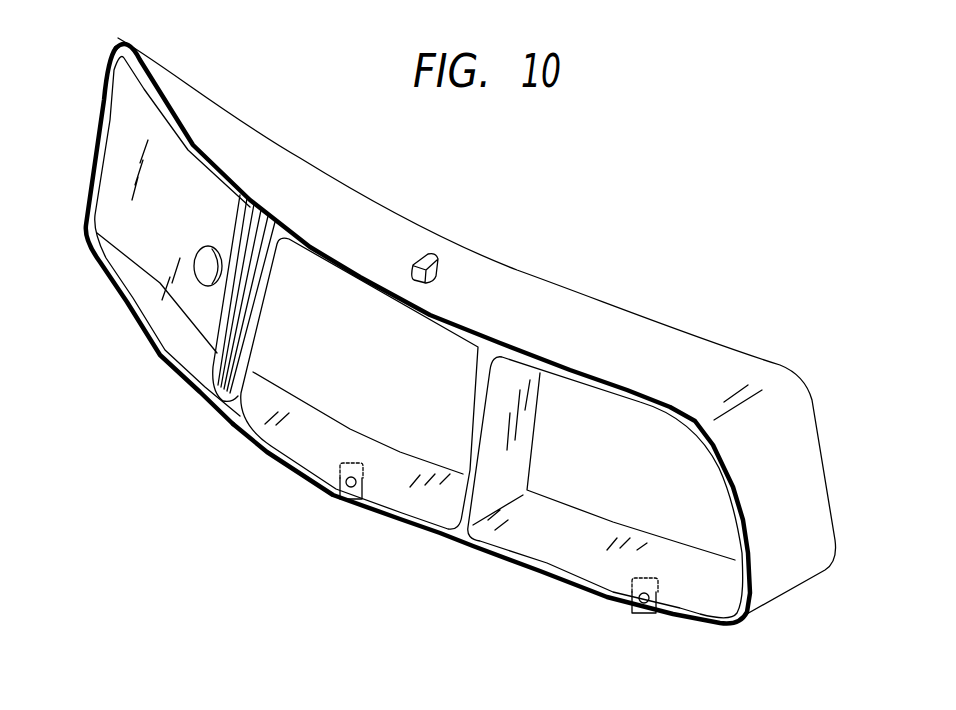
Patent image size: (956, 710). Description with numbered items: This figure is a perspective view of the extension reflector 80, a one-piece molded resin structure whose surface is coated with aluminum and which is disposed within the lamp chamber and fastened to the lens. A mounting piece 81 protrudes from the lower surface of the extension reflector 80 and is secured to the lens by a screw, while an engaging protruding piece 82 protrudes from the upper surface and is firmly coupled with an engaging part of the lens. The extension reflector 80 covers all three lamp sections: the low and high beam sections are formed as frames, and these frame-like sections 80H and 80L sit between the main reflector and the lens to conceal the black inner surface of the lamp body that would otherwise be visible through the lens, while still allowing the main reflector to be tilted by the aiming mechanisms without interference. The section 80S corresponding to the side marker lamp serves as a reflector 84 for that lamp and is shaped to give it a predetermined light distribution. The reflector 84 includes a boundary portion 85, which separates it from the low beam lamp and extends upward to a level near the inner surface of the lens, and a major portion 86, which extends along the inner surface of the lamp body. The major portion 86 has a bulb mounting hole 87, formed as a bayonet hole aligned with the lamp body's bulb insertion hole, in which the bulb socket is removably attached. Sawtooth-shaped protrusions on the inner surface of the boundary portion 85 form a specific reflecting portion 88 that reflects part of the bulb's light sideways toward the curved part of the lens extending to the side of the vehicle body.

The extension reflector 80 is at (604, 293).
The section corresponding to the side marker lamp 80S is at (163, 335).
The frame-like section for the low beam lamp 80L is at (290, 435).
The frame-like section for the high beam lamp 80H is at (537, 559).
The mounting piece 81 is at (345, 499).
The engaging protruding piece 82 is at (440, 270).
The reflector for the side marker lamp 84 is at (117, 247).
The boundary portion 85 is at (231, 258).
The major portion 86 is at (183, 163).
The bulb mounting hole 87 is at (266, 228).
The specific reflecting portion 88 is at (215, 390).